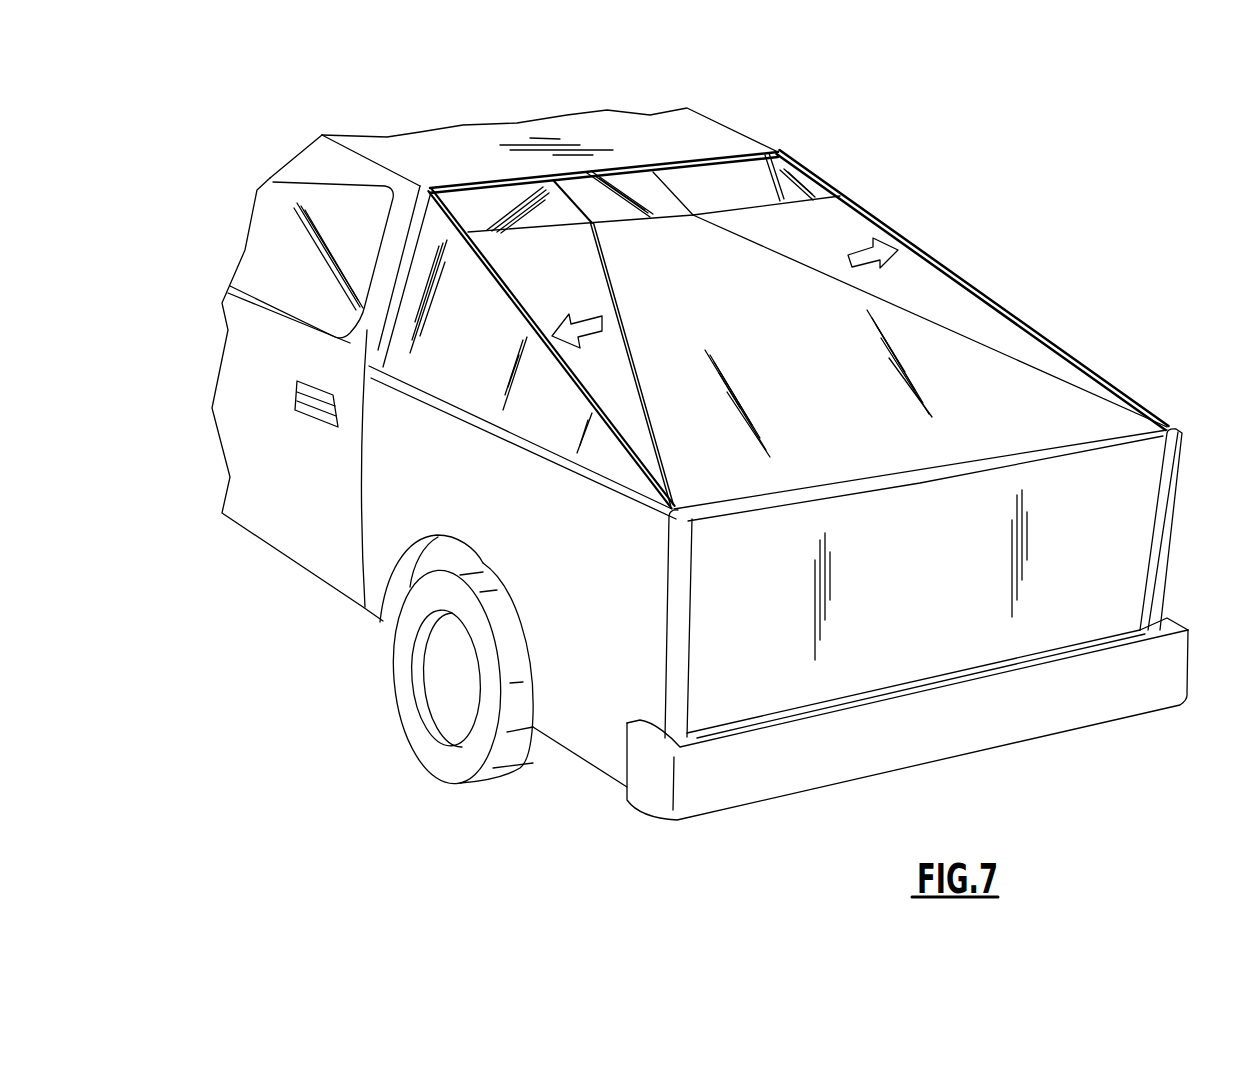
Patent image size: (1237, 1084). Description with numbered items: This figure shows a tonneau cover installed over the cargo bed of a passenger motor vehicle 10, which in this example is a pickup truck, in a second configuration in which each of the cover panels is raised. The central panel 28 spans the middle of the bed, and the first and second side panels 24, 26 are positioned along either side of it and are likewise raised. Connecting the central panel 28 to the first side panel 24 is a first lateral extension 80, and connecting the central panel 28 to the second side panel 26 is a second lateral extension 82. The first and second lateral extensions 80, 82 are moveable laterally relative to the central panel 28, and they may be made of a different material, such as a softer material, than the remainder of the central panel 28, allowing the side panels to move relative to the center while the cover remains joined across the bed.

The passenger motor vehicle 10 is at (700, 457).
The first side panel 24 is at (490, 398).
The second side panel 26 is at (1020, 310).
The central panel 28 is at (762, 315).
The first lateral extension 80 is at (543, 285).
The second lateral extension 82 is at (918, 280).